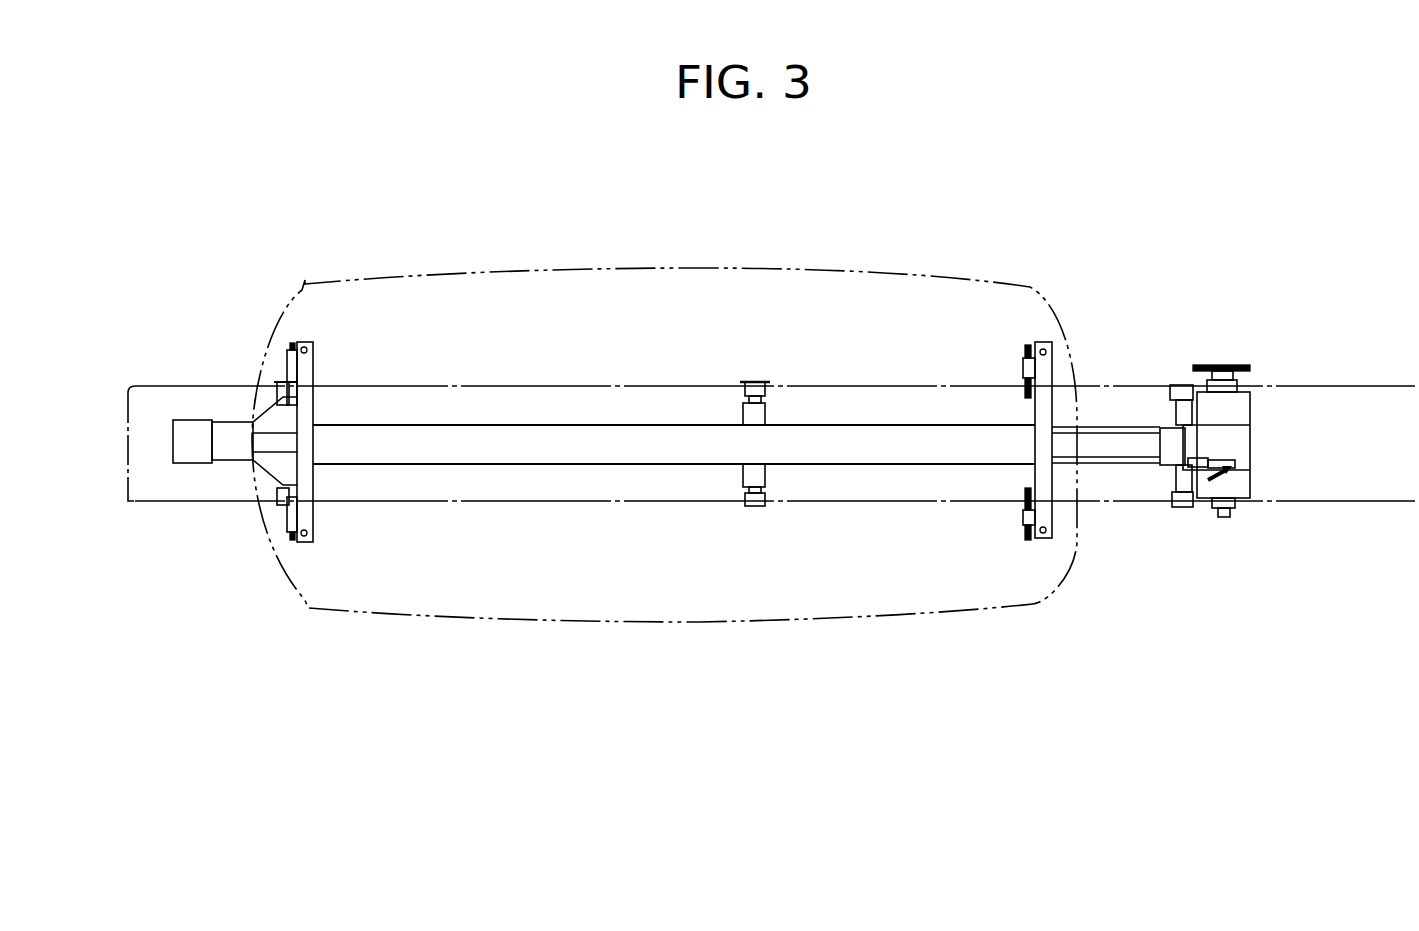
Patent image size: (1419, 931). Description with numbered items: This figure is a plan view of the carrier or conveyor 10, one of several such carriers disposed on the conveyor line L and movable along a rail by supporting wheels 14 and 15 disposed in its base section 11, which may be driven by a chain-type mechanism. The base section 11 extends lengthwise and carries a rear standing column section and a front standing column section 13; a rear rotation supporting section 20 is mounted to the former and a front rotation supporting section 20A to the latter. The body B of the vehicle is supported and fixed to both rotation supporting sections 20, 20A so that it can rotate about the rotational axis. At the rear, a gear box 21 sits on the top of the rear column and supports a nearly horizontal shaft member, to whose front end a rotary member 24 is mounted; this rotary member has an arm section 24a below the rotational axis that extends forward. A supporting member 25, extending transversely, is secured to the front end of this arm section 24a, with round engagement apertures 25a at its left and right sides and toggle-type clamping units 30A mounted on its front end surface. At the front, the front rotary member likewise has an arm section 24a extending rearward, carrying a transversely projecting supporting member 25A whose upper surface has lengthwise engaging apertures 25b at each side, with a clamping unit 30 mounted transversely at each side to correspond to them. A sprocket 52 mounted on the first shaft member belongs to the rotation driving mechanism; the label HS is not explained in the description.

The conveyor line L is at (1363, 382).
The body of the vehicle B is at (846, 262).
The heat sensing system HS is at (1070, 245).
The carrier or conveyor 10 is at (926, 342).
The base section 11 is at (565, 424).
The front standing column section 13 is at (179, 463).
The supporting wheel 14 is at (278, 497).
The supporting wheel 15 is at (278, 390).
The rear rotation supporting section 20 is at (1136, 480).
The front rotation supporting section 20A is at (228, 368).
The gear box 21 is at (1237, 420).
The rotary member 24 is at (1170, 467).
The arm section 24a is at (300, 430).
The supporting member 25 is at (1035, 432).
The supporting member 25A is at (315, 480).
The engagement aperture 25a is at (1050, 343).
The engaging aperture 25b is at (313, 350).
The clamping unit 30 is at (1203, 455).
The clamping unit 30A is at (291, 355).
The sprocket 52 is at (1233, 366).